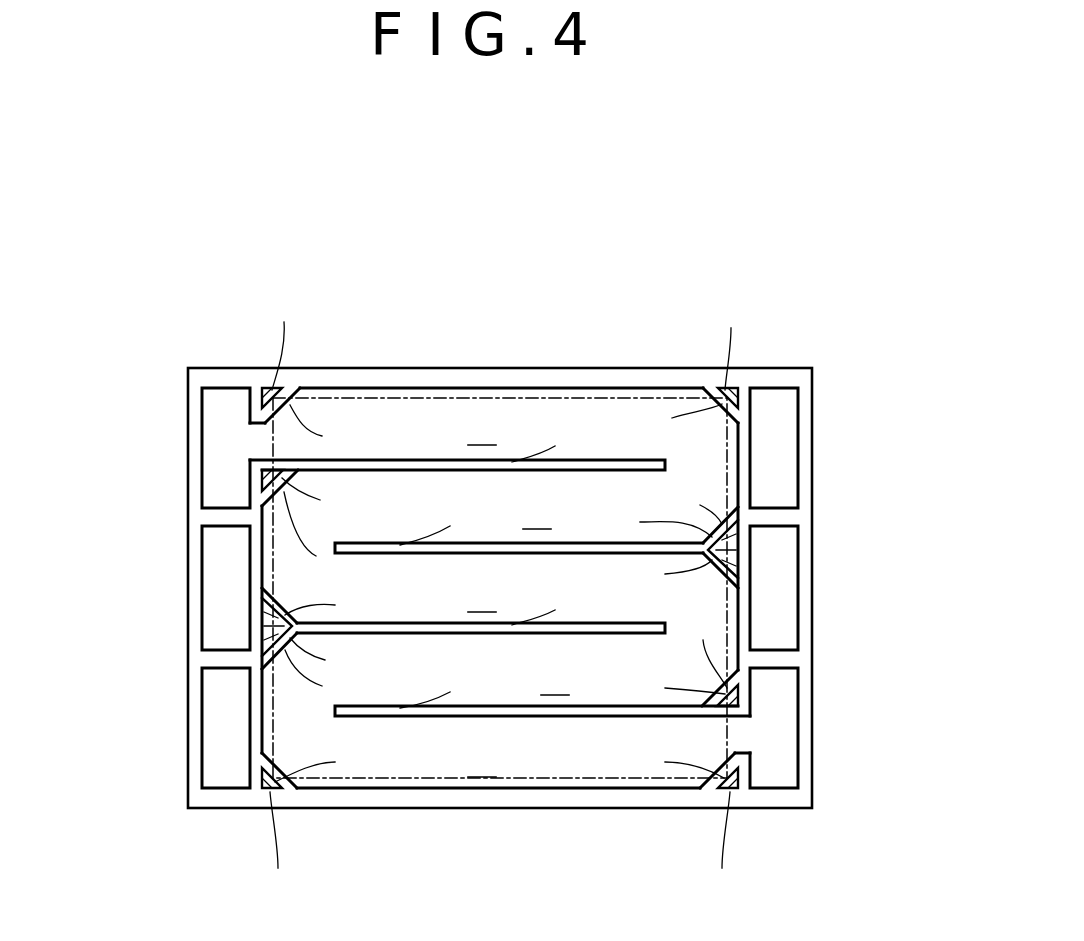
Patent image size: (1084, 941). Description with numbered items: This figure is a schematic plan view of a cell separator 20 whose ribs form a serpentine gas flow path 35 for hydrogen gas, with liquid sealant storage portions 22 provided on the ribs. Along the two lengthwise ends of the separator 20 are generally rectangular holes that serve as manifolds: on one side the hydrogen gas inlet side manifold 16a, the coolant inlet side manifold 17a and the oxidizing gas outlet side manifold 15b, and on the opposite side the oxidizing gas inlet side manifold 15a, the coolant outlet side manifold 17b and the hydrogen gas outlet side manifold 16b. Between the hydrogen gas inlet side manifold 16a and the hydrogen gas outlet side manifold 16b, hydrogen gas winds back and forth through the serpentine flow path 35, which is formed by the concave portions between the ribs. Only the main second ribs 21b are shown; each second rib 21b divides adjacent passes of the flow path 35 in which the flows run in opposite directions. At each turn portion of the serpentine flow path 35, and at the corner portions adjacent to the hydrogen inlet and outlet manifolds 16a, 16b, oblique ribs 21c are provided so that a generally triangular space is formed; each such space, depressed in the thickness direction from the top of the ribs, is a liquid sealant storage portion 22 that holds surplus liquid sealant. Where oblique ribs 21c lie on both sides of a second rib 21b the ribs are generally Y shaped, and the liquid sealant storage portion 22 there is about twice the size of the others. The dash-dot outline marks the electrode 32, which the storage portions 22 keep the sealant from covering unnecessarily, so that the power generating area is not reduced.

The separator 20 is at (511, 370).
The electrode 32 is at (455, 396).
The hydrogen gas inlet side manifold 16a is at (225, 390).
The coolant inlet side manifold 17a is at (225, 530).
The oxidizing gas outlet side manifold 15b is at (225, 670).
The oxidizing gas inlet side manifold 15a is at (775, 390).
The coolant outlet side manifold 17b is at (775, 530).
The hydrogen gas outlet side manifold 16b is at (775, 670).
The gas flow path for hydrogen gas 35 is at (500, 588).
The second rib 21b is at (500, 563).
The oblique rib 21c is at (500, 588).
The liquid sealant storage portion 22 is at (505, 595).